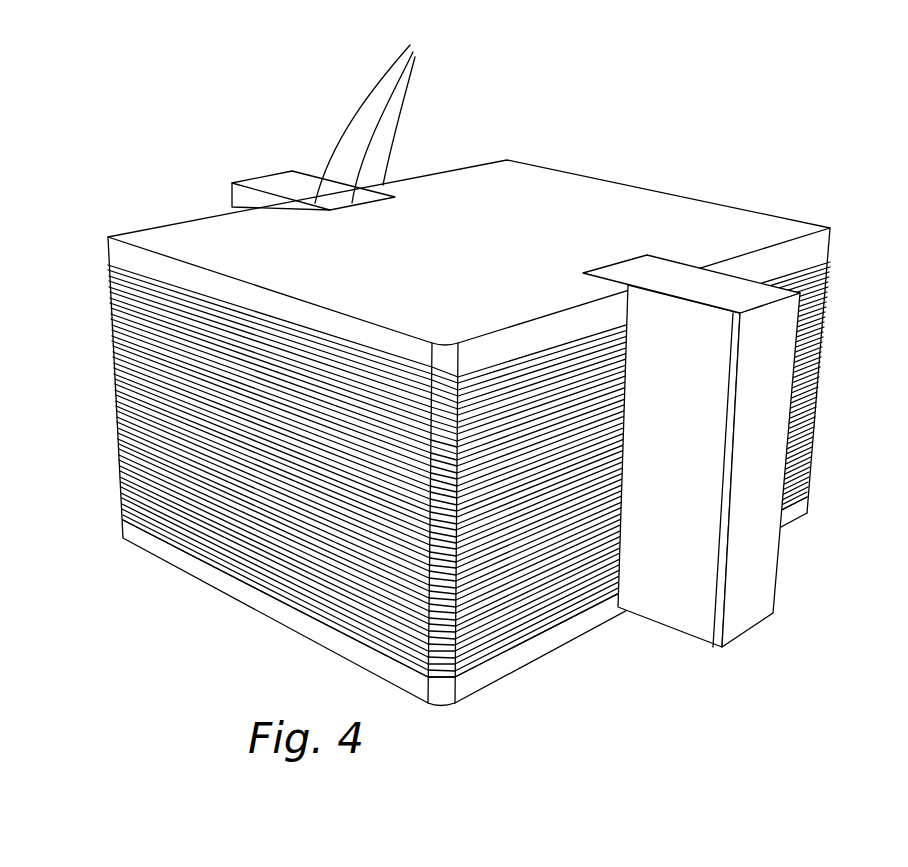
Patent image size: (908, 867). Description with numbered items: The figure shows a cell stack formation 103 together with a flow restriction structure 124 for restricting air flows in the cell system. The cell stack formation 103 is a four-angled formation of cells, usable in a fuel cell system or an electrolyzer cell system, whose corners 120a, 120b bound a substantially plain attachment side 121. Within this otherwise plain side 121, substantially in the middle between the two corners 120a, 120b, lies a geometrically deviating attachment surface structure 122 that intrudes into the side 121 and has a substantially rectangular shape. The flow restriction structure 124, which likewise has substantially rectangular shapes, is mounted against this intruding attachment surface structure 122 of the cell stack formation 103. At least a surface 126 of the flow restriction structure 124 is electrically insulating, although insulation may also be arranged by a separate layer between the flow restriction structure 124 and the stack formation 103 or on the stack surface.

The cell stack formation 103 is at (290, 597).
The corner of the four angled stack formation 120a is at (108, 236).
The corner of the four angled stack formation 120b is at (507, 160).
The substantially plain attachment side 121 is at (553, 617).
The geometrically deviating attachment surface structure 122 is at (303, 215).
The flow restriction structure 124 is at (312, 190).
The surface of the flow restriction structure 126 is at (393, 113).